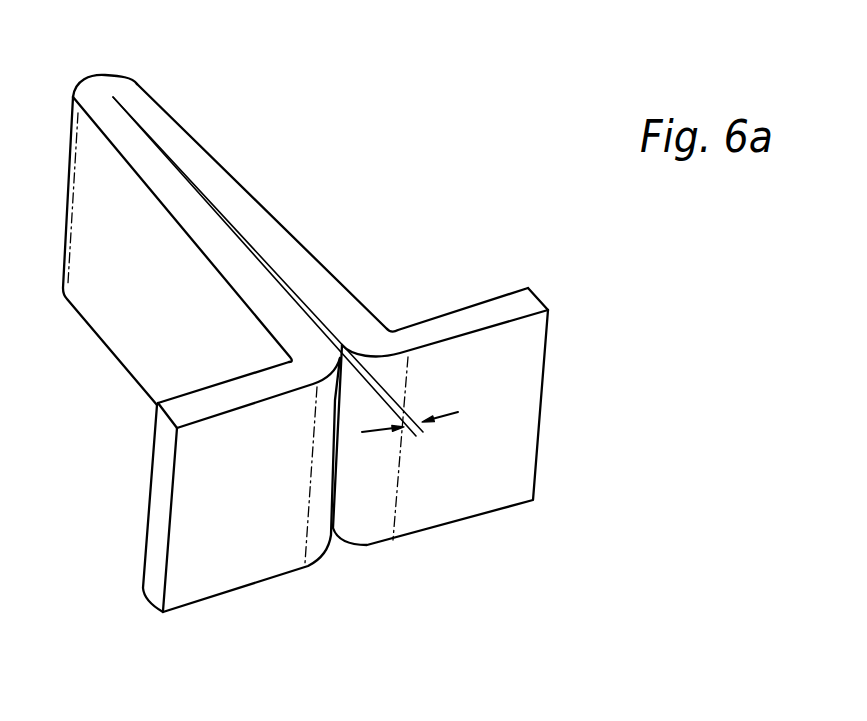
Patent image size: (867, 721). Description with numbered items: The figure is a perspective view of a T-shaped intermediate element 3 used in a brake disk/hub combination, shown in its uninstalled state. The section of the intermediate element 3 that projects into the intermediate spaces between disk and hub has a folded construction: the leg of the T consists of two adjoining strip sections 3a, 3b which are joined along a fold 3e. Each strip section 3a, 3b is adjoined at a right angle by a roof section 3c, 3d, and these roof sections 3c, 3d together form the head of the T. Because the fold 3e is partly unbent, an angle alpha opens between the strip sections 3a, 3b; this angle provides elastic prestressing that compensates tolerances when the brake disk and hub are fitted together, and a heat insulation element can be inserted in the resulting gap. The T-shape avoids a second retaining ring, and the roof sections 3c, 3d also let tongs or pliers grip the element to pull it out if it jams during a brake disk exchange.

The intermediate element 3 is at (417, 232).
The strip section 3a is at (122, 313).
The strip section 3b is at (255, 218).
The roof section 3c is at (215, 572).
The roof section 3d is at (531, 368).
The fold 3e is at (117, 92).